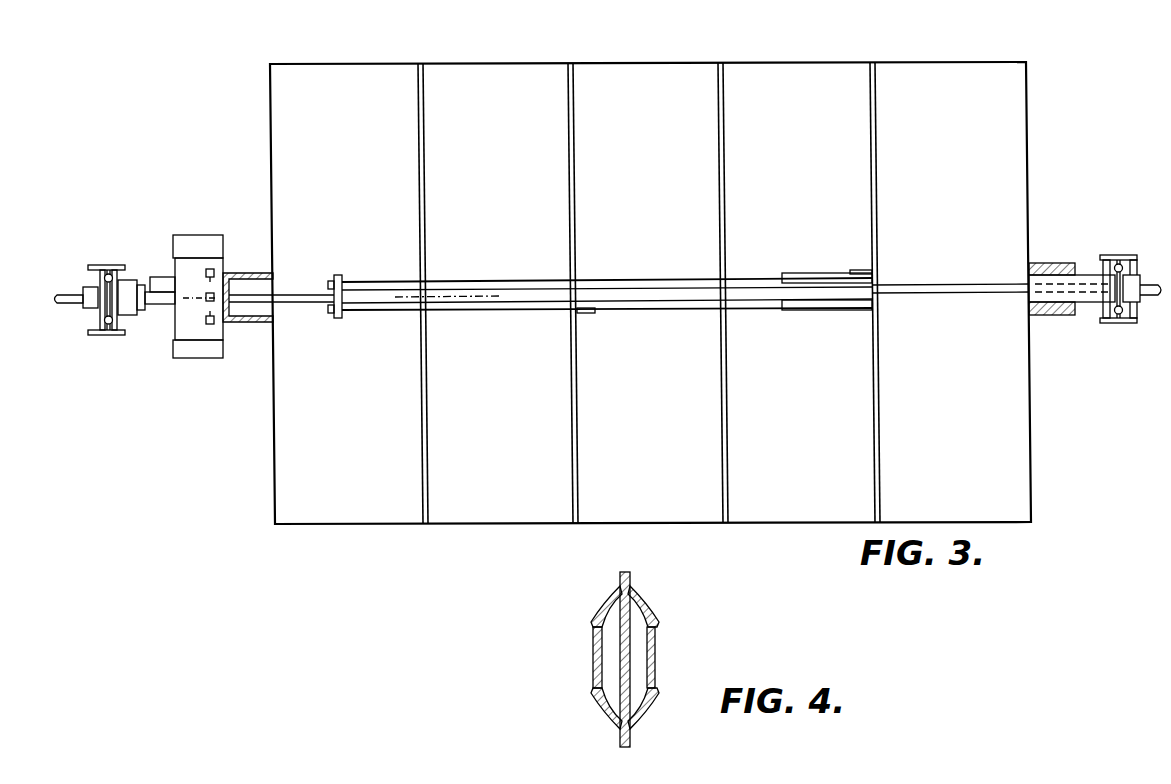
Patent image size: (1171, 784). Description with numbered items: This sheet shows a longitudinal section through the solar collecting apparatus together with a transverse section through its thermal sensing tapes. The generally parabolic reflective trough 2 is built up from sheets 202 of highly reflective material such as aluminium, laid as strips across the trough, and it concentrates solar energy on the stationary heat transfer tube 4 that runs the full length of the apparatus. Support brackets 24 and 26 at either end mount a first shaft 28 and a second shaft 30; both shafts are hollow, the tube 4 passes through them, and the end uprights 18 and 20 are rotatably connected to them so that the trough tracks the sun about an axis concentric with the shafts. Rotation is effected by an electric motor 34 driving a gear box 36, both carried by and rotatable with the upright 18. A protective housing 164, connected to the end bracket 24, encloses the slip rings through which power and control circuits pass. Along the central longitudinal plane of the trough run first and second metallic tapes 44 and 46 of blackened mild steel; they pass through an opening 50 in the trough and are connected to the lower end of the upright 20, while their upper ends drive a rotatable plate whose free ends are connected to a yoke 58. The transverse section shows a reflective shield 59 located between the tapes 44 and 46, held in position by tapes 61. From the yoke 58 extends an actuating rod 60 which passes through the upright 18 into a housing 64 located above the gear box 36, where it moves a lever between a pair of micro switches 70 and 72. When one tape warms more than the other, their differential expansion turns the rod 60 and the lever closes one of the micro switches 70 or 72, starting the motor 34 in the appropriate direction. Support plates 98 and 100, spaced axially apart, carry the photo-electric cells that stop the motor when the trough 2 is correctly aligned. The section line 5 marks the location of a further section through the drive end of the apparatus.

In FIG. 3, the reflective trough 2 is at (218, 128).
In FIG. 3, the heat transfer tube 4 is at (470, 293).
In FIG. 3, the section line 5 is at (147, 280).
In FIG. 3, the end upright 18 is at (255, 323).
In FIG. 3, the end upright 20 is at (1057, 263).
In FIG. 3, the support bracket 24 is at (118, 262).
In FIG. 3, the support bracket 26 is at (1112, 324).
In FIG. 3, the first shaft 28 is at (91, 291).
In FIG. 3, the second shaft 30 is at (1090, 275).
In FIG. 3, the electric motor 34 is at (163, 280).
In FIG. 3, the gear box 36 is at (200, 241).
In FIG. 3, the first metallic tape 44 is at (398, 305).
In FIG. 4, the first metallic tape 44 is at (655, 660).
In FIG. 3, the second metallic tape 46 is at (405, 282).
In FIG. 4, the second metallic tape 46 is at (593, 660).
In FIG. 3, the opening 50 is at (806, 273).
In FIG. 3, the yoke 58 is at (338, 319).
In FIG. 4, the reflective shield 59 is at (633, 587).
In FIG. 3, the actuating rod 60 is at (295, 304).
In FIG. 4, the tapes 61 is at (600, 621).
In FIG. 3, the housing 64 is at (195, 345).
In FIG. 3, the micro switch 70 is at (215, 274).
In FIG. 3, the micro switch 72 is at (210, 326).
In FIG. 3, the support plate 98 is at (590, 313).
In FIG. 3, the support plate 100 is at (862, 271).
In FIG. 3, the protective housing 164 is at (128, 306).
In FIG. 3, the reflective sheets 202 is at (378, 73).